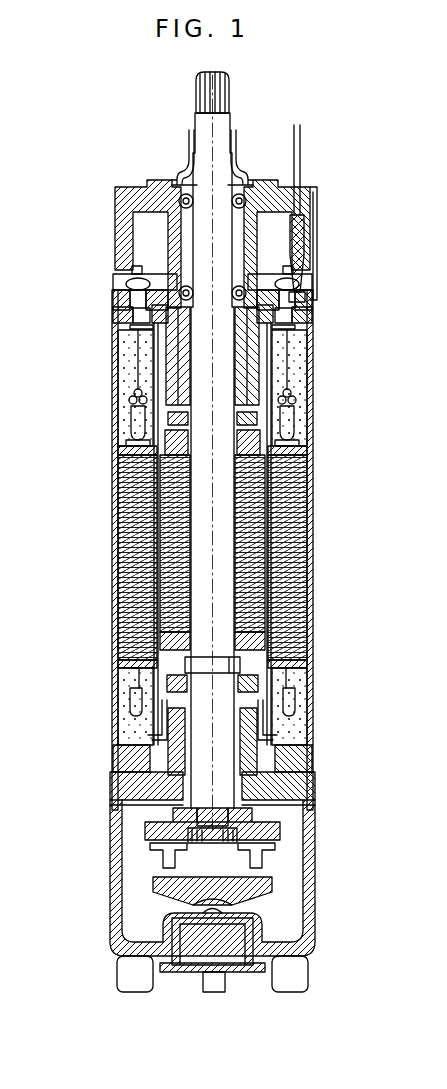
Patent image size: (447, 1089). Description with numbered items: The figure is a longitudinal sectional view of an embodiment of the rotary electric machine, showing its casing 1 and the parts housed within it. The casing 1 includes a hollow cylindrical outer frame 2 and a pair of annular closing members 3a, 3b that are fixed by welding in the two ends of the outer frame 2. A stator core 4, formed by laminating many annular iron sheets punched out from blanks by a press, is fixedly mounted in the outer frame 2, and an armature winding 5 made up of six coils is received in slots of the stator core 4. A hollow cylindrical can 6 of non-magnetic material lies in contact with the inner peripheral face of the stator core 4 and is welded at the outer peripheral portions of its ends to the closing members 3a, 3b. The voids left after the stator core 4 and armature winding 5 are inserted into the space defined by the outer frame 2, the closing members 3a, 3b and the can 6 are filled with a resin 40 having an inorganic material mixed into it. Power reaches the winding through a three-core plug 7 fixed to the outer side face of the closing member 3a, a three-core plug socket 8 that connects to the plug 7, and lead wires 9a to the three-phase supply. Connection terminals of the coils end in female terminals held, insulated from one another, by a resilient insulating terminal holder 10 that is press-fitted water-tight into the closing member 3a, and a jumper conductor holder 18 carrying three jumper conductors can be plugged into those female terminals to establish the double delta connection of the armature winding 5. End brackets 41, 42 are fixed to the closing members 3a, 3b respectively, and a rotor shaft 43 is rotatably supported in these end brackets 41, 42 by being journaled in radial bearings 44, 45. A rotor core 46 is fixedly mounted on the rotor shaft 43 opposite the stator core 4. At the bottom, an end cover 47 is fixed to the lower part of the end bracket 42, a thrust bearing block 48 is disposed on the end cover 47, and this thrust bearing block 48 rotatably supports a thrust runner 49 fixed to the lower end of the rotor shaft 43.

The casing 1 is at (112, 620).
The outer frame 2 is at (114, 400).
The closing member 3a is at (113, 280).
The closing member 3b is at (113, 772).
The stator core 4 is at (120, 514).
The armature winding 5 is at (138, 438).
The can 6 is at (268, 532).
The three-core plug 7 is at (303, 313).
The three-core plug socket 8 is at (300, 252).
The lead wire 9a is at (300, 145).
The terminal holder 10 is at (130, 316).
The jumper conductor holder 18 is at (136, 266).
The resin 40 is at (298, 378).
The end bracket 41 is at (116, 193).
The end bracket 42 is at (112, 797).
The rotor shaft 43 is at (196, 98).
The radial bearing 44 is at (250, 353).
The radial bearing 45 is at (180, 722).
The rotor core 46 is at (172, 545).
The end cover 47 is at (305, 940).
The thrust bearing block 48 is at (275, 894).
The thrust runner 49 is at (278, 846).